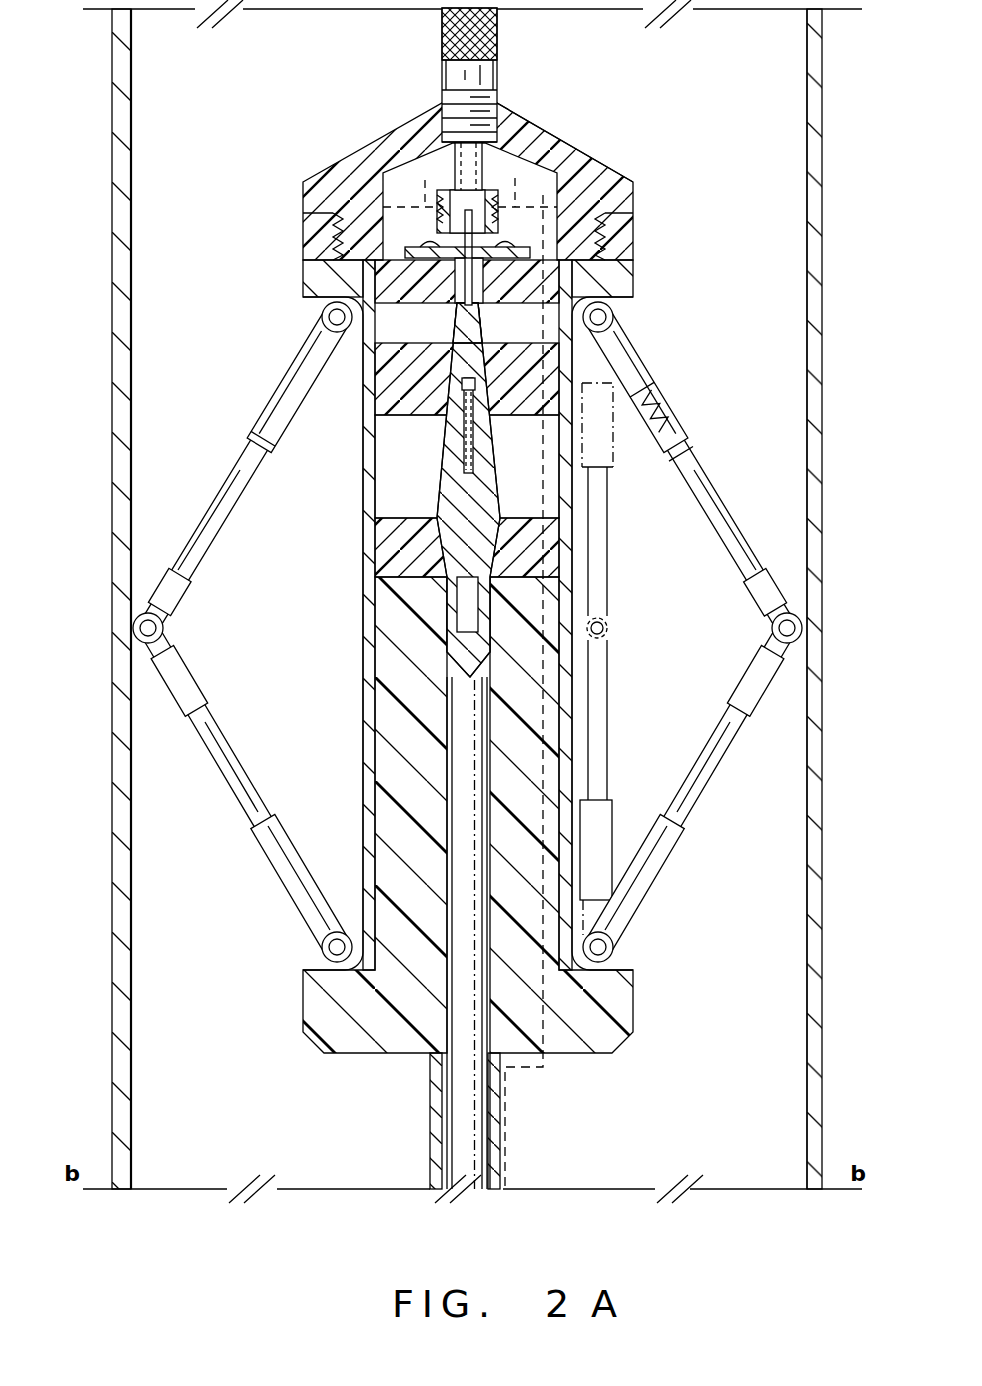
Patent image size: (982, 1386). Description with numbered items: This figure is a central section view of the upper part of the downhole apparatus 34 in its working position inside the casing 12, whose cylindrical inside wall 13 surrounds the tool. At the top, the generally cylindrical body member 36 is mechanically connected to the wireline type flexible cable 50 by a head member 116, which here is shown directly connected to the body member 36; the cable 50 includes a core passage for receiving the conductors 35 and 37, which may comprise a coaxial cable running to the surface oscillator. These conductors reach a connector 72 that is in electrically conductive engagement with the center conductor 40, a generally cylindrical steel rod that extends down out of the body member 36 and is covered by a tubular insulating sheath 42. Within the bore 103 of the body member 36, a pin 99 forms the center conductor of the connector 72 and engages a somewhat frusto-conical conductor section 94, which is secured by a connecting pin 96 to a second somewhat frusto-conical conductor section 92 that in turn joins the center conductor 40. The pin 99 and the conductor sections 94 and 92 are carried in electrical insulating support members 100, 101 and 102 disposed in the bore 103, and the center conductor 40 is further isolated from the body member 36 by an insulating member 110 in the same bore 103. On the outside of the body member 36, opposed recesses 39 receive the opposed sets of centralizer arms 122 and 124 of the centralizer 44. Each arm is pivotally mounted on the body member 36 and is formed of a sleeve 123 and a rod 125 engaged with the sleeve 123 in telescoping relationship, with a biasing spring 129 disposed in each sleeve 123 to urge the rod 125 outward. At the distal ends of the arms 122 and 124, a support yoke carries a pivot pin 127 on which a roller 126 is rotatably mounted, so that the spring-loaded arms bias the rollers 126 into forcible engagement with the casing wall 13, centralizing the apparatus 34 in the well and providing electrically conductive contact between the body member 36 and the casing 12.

The casing 12 is at (822, 203).
The inside wall of the casing 13 is at (807, 165).
The apparatus 34 is at (701, 380).
The conductor 35 is at (487, 158).
The body member 36 is at (633, 258).
The conductor 37 is at (407, 205).
The recesses 39 is at (320, 960).
The center conductor 40 is at (448, 1140).
The insulating sheath 42 is at (505, 1100).
The centralizer 44 is at (262, 420).
The cable 50 is at (497, 34).
The connector 72 is at (503, 222).
The conductor section 92 is at (455, 468).
The conductor section 94 is at (457, 325).
The connecting pin 96 is at (474, 440).
The pin 99 is at (497, 212).
The insulating support member 100 is at (383, 285).
The insulating support member 101 is at (380, 392).
The insulating support member 102 is at (383, 540).
The bore 103 is at (378, 490).
The insulating member 110 is at (410, 1048).
The head member 116 is at (612, 170).
The centralizer arms 122 is at (228, 480).
The sleeve 123 is at (296, 372).
The centralizer arms 124 is at (190, 720).
The rod 125 is at (708, 512).
The roller 126 is at (135, 640).
The pivot pin 127 is at (142, 624).
The biasing spring 129 is at (650, 395).